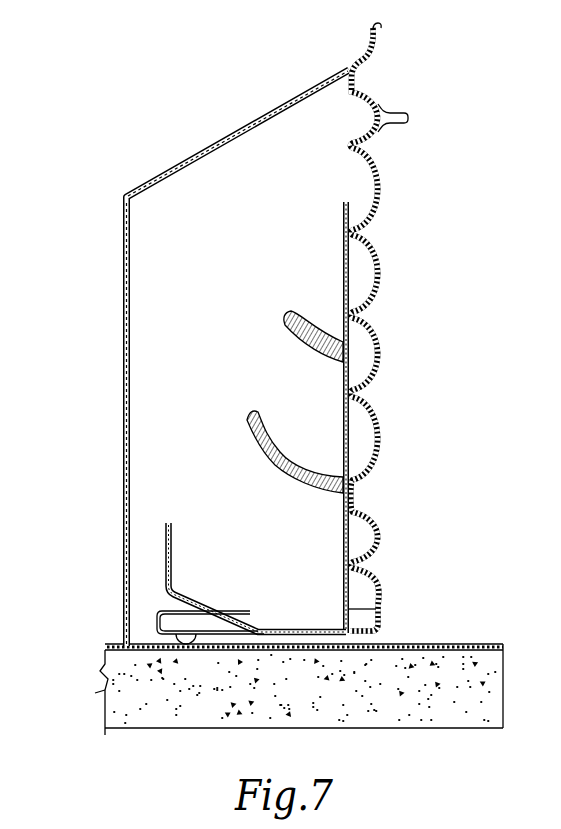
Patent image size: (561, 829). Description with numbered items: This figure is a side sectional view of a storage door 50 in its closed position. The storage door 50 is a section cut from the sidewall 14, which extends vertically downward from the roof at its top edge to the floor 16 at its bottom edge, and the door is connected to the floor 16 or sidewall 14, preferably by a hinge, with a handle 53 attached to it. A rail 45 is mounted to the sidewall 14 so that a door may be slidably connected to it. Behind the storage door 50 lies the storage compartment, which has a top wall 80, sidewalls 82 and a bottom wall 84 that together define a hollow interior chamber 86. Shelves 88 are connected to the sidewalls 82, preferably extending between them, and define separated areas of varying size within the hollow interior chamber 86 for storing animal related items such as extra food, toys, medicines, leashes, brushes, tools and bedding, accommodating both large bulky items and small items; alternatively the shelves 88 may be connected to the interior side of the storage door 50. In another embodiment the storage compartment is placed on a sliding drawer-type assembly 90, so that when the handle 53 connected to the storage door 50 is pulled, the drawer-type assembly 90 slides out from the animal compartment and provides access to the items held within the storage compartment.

The sidewall 14 is at (371, 38).
The floor 16 is at (118, 644).
The rail 45 is at (158, 611).
The storage door 50 is at (390, 324).
The handle 53 is at (405, 112).
The top wall 80 is at (237, 125).
The sidewalls 82 is at (123, 458).
The bottom wall 84 is at (187, 649).
The hollow interior chamber 86 is at (213, 227).
The shelves 88 is at (289, 312).
The sliding drawer-type assembly 90 is at (466, 165).